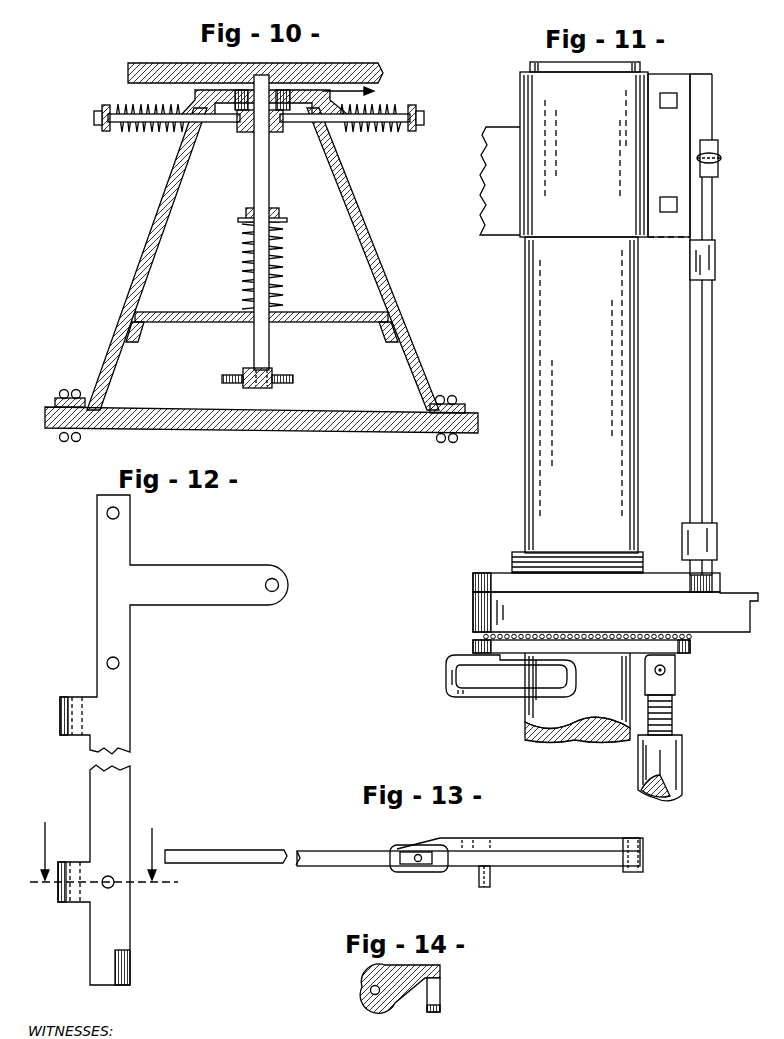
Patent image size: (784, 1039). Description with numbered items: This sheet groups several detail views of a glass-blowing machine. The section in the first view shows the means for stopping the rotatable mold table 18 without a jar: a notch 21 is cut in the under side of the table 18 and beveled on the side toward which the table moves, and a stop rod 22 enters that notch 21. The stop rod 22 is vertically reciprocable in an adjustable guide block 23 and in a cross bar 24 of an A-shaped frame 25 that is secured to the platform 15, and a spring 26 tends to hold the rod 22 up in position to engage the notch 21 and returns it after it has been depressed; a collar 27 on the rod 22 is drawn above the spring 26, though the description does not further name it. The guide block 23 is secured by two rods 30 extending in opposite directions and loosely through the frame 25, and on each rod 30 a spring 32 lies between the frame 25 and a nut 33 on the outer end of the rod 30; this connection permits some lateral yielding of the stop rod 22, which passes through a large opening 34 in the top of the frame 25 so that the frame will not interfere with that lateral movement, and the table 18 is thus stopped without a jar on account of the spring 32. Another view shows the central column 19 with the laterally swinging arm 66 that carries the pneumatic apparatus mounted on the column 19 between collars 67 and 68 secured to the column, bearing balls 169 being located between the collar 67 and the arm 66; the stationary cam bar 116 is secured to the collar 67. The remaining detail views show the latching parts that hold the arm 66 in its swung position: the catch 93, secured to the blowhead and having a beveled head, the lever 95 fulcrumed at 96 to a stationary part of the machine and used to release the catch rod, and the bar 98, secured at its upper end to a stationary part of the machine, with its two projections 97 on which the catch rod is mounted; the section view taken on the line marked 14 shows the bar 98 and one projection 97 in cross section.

In FIG. 10, the platform 15 is at (347, 418).
In FIG. 10, the mold table 18 is at (311, 76).
In FIG. 11, the column 19 is at (545, 370).
In FIG. 10, the notch 21 is at (272, 94).
In FIG. 10, the stop rod 22 is at (265, 193).
In FIG. 10, the adjustable guide block 23 is at (250, 133).
In FIG. 10, the cross bar 24 is at (211, 320).
In FIG. 10, the A-shaped frame 25 is at (374, 282).
In FIG. 10, the spring 26 is at (278, 260).
In FIG. 10, the collar 27 is at (245, 220).
In FIG. 10, the rods 30 is at (146, 124).
In FIG. 10, the spring 32 is at (152, 107).
In FIG. 10, the nut 33 is at (100, 123).
In FIG. 10, the opening 34 is at (245, 96).
In FIG. 11, the laterally swinging arm 66 is at (615, 612).
In FIG. 11, the collar 67 is at (478, 646).
In FIG. 11, the collar 68 is at (488, 584).
In FIG. 13, the catch 93 is at (490, 881).
In FIG. 11, the lever 95 is at (719, 154).
In FIG. 13, the lever 95 is at (307, 852).
In FIG. 12, the fulcrum 96 is at (277, 584).
In FIG. 13, the fulcrum 96 is at (629, 848).
In FIG. 11, the projections 97 is at (716, 270).
In FIG. 12, the projections 97 is at (62, 718).
In FIG. 14, the projections 97 is at (373, 996).
In FIG. 11, the bar 98 is at (673, 404).
In FIG. 12, the bar 98 is at (118, 704).
In FIG. 14, the bar 98 is at (441, 998).
In FIG. 11, the cam bar 116 is at (488, 694).
In FIG. 11, the bearing balls 169 is at (688, 638).
In FIG. 12, the section line 14- 14 is at (103, 863).